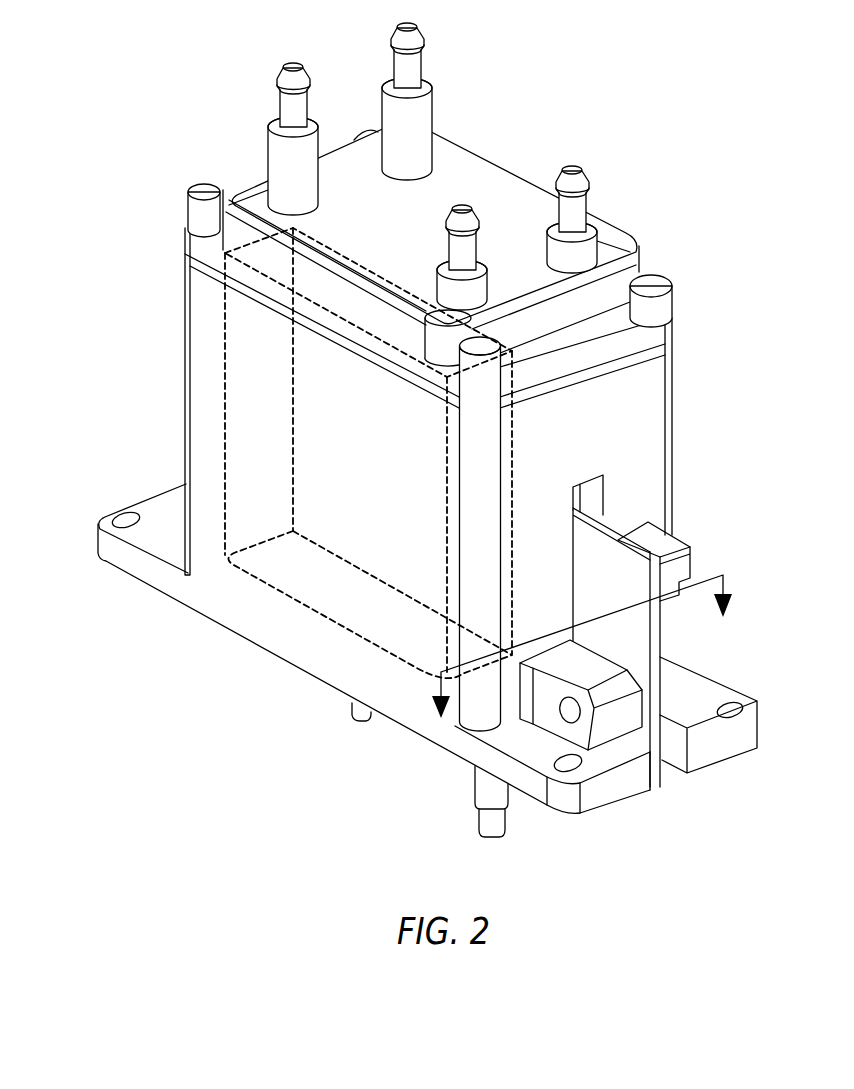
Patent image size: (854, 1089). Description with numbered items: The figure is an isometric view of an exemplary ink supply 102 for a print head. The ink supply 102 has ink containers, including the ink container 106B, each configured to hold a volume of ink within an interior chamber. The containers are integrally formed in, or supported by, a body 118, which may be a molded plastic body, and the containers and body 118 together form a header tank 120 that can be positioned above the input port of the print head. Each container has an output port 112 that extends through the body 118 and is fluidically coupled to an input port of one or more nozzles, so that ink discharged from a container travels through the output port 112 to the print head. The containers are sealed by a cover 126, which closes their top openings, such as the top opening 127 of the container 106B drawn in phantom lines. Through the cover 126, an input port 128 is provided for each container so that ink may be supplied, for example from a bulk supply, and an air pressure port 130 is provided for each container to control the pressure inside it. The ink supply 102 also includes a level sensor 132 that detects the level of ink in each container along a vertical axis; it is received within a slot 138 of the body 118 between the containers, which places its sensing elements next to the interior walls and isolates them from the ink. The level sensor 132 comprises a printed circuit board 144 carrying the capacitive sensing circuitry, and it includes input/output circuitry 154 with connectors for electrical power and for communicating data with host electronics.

The ink supply 102 is at (677, 201).
The ink container 106B is at (321, 498).
The output port 112 is at (355, 712).
The body 118 is at (242, 326).
The header tank 120 is at (198, 447).
The cover 126 is at (480, 177).
The top opening 127 is at (225, 252).
The input port 128 is at (278, 126).
The air pressure port 130 is at (455, 247).
The level sensor 132 is at (709, 511).
The slot 138 is at (604, 497).
The printed circuit board 144 is at (653, 626).
The input/output circuitry 154 is at (673, 549).